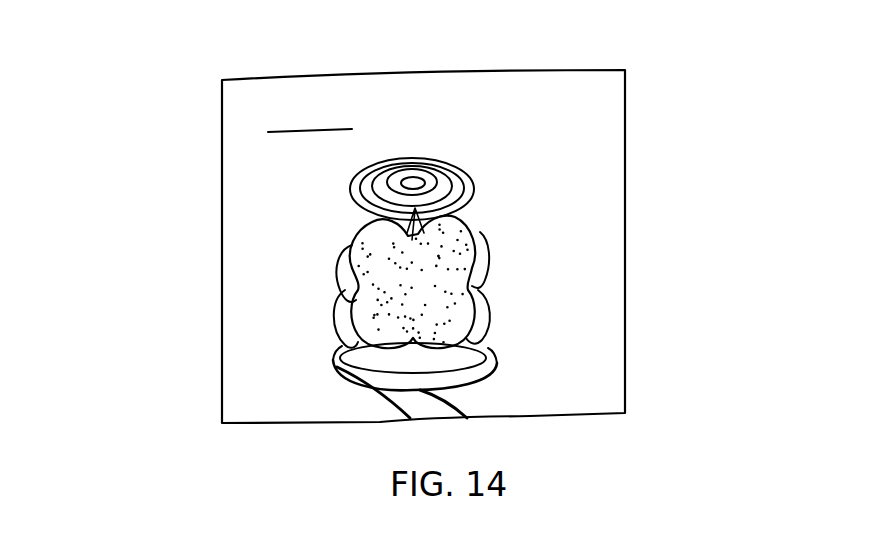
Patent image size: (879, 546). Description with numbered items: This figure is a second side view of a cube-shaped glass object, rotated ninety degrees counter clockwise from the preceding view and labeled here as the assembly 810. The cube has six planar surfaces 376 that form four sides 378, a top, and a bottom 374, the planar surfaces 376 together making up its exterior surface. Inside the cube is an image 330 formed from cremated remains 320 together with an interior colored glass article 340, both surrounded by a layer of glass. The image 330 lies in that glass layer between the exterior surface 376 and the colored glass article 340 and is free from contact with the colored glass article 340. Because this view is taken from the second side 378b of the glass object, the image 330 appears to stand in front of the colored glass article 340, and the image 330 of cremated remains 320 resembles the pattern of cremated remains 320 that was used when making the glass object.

The packaged article assembly 810 is at (663, 40).
The planar surface 376 is at (320, 74).
The side 378 is at (624, 201).
The second side 378b is at (310, 116).
The bottom 374 is at (218, 0).
The image 330 is at (482, 253).
The cremated remains 320 is at (463, 315).
The colored glass article 340 is at (497, 369).